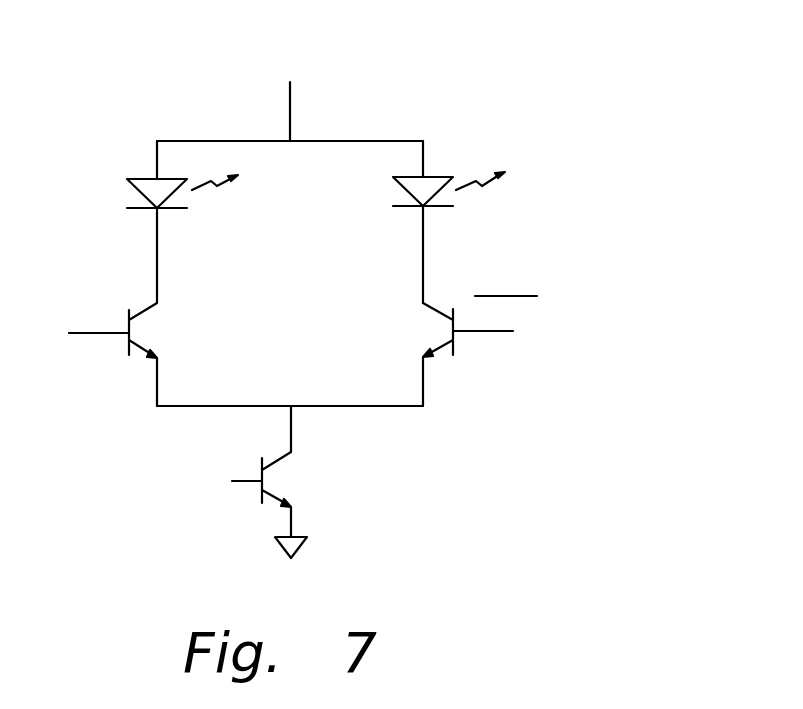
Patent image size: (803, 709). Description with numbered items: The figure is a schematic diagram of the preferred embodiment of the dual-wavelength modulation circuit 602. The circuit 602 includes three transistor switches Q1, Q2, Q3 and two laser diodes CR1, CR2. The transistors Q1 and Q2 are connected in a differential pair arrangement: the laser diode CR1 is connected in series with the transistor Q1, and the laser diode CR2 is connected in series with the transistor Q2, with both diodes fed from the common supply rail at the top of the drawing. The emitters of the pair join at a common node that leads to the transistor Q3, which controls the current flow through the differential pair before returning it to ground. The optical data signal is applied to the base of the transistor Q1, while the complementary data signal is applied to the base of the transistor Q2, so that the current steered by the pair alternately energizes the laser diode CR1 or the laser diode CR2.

The dual-wavelength modulation circuit 602 is at (290, 283).
The laser diode CR1 is at (140, 222).
The laser diode CR2 is at (417, 222).
The transistor switch Q1 is at (126, 354).
The transistor switch Q2 is at (451, 351).
The transistor switch Q3 is at (294, 482).